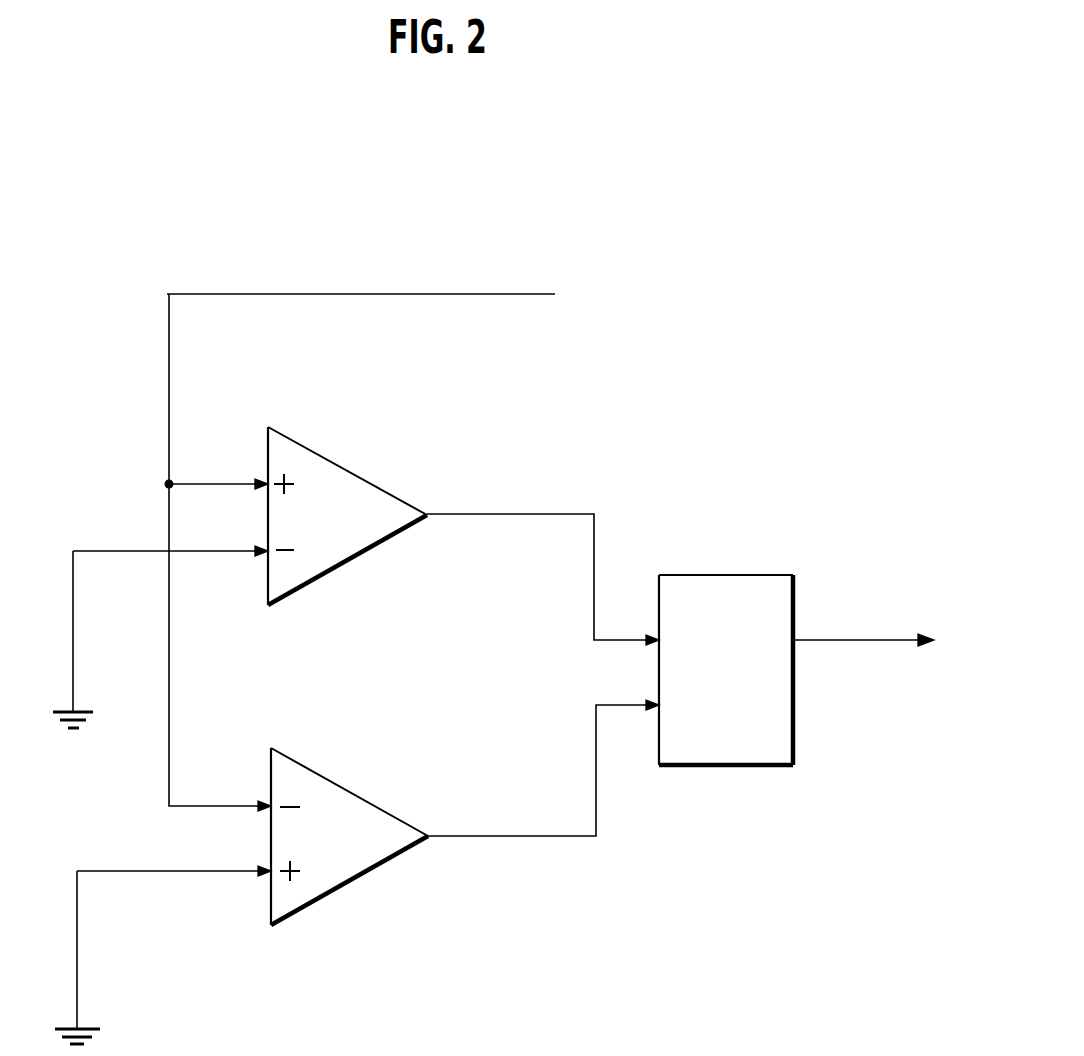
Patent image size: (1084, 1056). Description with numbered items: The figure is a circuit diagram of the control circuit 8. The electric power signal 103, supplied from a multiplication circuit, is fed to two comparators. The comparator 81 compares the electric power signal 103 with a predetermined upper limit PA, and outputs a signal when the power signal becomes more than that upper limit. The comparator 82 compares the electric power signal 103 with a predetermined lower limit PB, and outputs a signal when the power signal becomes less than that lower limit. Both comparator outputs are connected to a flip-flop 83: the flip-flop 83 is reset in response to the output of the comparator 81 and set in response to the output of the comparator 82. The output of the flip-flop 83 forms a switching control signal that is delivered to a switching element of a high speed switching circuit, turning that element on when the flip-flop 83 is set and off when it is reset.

The control circuit 8 is at (573, 196).
The electric power signal 103 is at (488, 293).
The comparator 81 is at (347, 470).
The comparator 82 is at (377, 872).
The flip-flop 83 is at (705, 580).